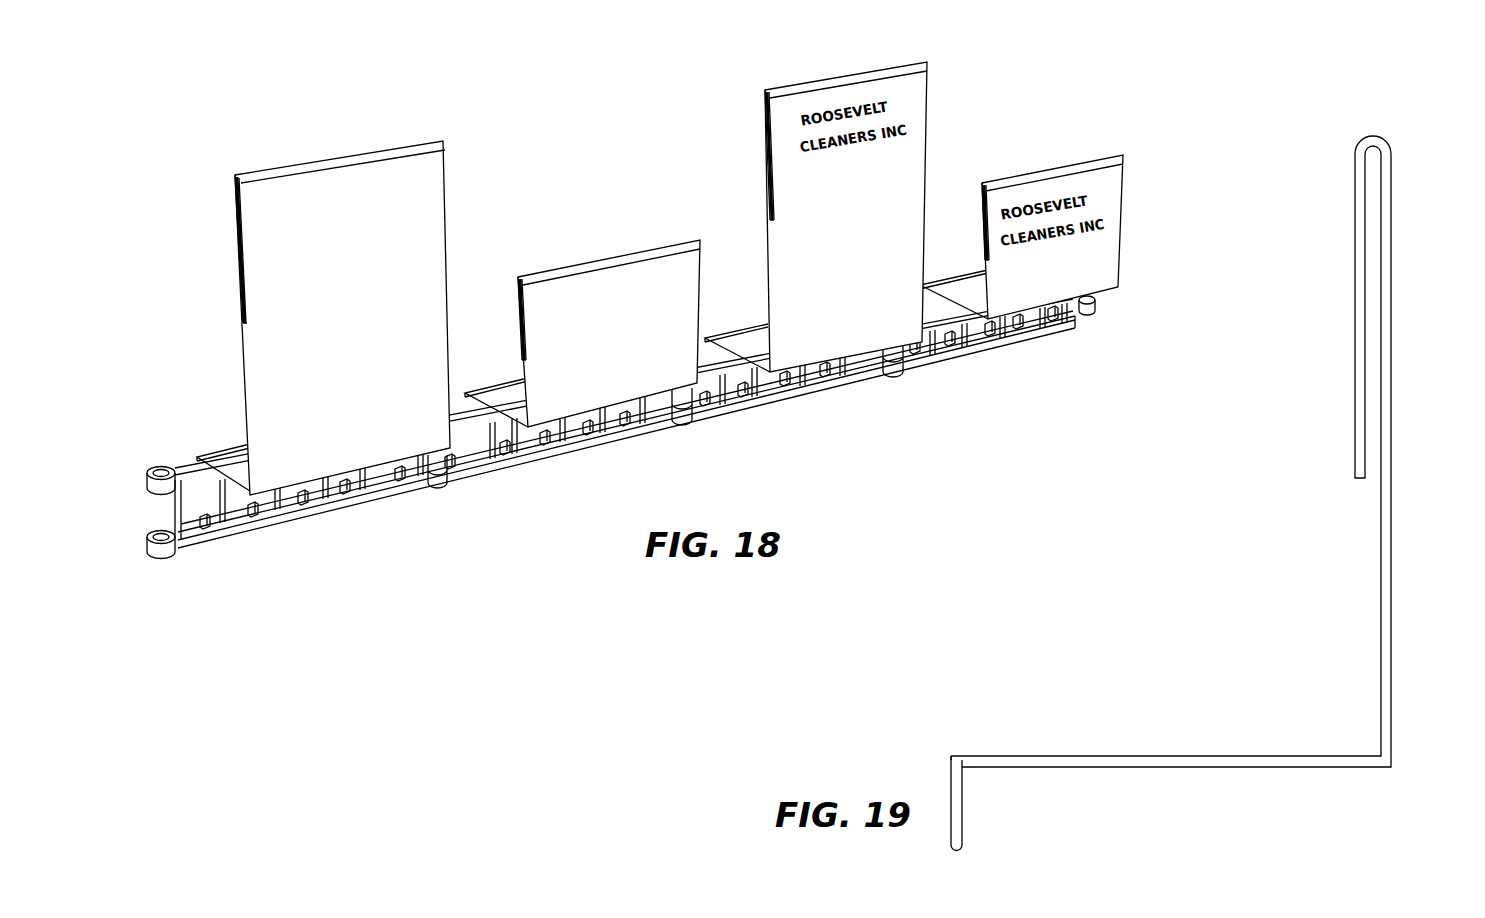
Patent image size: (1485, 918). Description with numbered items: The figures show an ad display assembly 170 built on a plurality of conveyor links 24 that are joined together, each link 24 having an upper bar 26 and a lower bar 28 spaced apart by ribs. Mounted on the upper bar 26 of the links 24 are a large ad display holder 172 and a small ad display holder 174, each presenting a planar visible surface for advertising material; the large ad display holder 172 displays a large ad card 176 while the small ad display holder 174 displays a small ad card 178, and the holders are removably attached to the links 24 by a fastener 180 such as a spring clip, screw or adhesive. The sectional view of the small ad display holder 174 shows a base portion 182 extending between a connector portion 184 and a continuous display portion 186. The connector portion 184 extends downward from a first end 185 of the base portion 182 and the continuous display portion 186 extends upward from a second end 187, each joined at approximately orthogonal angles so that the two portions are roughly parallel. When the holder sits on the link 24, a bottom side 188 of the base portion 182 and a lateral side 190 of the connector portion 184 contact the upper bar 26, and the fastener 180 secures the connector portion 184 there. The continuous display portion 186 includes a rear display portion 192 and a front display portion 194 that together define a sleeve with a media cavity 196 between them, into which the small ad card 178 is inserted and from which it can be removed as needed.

In FIG. 18, the link 24 is at (757, 410).
In FIG. 18, the upper bar 26 is at (186, 468).
In FIG. 18, the lower bar 28 is at (592, 452).
In FIG. 18, the ad display assembly 170 is at (238, 160).
In FIG. 18, the large ad display holder 172 is at (325, 180).
In FIG. 18, the small ad display holder 174 is at (612, 280).
In FIG. 19, the small ad display holder 174 is at (1328, 228).
In FIG. 18, the large ad card 176 is at (438, 180).
In FIG. 18, the small ad card 178 is at (695, 280).
In FIG. 18, the fastener 180 is at (303, 492).
In FIG. 19, the base portion 182 is at (1104, 752).
In FIG. 19, the connector portion 184 is at (953, 773).
In FIG. 19, the first end 185 is at (964, 761).
In FIG. 19, the continuous display portion 186 is at (1390, 515).
In FIG. 19, the second end 187 is at (1357, 757).
In FIG. 19, the bottom side 188 is at (1243, 770).
In FIG. 19, the lateral side 190 is at (957, 818).
In FIG. 19, the rear display portion 192 is at (1356, 353).
In FIG. 19, the front display portion 194 is at (1387, 284).
In FIG. 19, the media cavity 196 is at (1373, 178).